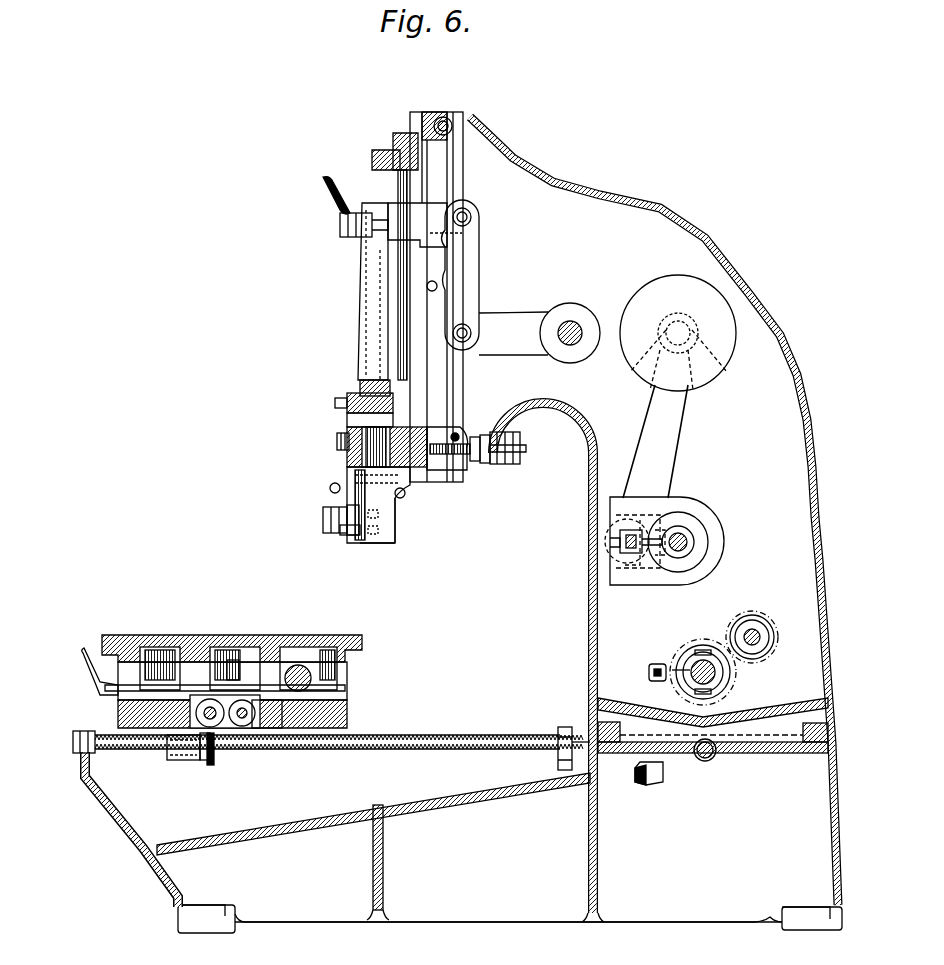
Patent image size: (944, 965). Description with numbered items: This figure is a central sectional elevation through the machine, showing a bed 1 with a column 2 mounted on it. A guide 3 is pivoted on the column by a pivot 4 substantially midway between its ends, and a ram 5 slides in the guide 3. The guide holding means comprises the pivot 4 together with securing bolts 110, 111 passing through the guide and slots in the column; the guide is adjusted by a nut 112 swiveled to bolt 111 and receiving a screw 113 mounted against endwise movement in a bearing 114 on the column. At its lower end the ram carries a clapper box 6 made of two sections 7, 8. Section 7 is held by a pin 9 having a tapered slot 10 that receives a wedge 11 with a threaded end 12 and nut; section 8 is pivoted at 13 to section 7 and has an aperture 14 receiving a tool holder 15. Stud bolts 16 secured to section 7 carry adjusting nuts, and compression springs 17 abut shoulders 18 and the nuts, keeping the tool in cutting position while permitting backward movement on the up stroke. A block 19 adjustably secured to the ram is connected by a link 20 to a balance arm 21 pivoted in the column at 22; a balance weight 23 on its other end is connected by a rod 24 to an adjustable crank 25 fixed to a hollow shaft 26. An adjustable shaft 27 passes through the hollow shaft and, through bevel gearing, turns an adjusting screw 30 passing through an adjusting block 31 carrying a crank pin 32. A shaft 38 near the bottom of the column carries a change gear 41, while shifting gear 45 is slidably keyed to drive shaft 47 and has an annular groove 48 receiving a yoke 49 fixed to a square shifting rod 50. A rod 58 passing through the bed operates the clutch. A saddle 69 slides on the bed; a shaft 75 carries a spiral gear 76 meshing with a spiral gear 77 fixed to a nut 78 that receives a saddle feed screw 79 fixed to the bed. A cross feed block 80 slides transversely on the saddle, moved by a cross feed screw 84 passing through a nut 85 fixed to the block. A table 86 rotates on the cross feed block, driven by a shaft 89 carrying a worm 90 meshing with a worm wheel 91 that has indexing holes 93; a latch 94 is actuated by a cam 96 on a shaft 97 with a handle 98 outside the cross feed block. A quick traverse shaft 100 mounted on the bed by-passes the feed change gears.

The bed 1 is at (326, 924).
The column 2 is at (583, 200).
The guide 3 is at (448, 178).
The pivot 4 is at (437, 290).
The ram 5 is at (360, 345).
The clapper box 6 is at (404, 497).
The section 7 is at (347, 483).
The section 8 is at (380, 547).
The pin 9 is at (362, 461).
The tapered slot 10 is at (347, 408).
The wedge 11 is at (367, 430).
The threaded end 12 is at (337, 441).
The pivot 13 is at (403, 500).
The aperture 14 is at (367, 545).
The tool holder 15 is at (340, 532).
The stud bolts 16 is at (347, 510).
The compression springs 17 is at (323, 522).
The shoulders 18 is at (365, 498).
The block 19 is at (385, 212).
The link 20 is at (470, 253).
The balance arm 21 is at (522, 350).
The pivot 22 is at (572, 330).
The balance weight 23 is at (657, 300).
The rod 24 is at (672, 427).
The adjustable crank 25 is at (672, 498).
The hollow shaft 26 is at (690, 540).
The adjustable shaft 27 is at (676, 578).
The adjusting screw 30 is at (640, 575).
The adjusting block 31 is at (612, 552).
The crank pin 32 is at (620, 533).
The shaft 38 is at (762, 636).
The change gear 41 is at (774, 658).
The shifting gear 45 is at (732, 690).
The drive shaft 47 is at (690, 682).
The annular groove 48 is at (695, 660).
The yoke 49 is at (668, 668).
The shifting rod 50 is at (648, 672).
The rod 58 is at (645, 788).
The saddle 69 is at (347, 715).
The shaft 75 is at (218, 728).
The spiral gear 76 is at (205, 760).
The spiral gear 77 is at (211, 766).
The nut 78 is at (178, 760).
The saddle feed screw 79 is at (348, 752).
The cross feed block 80 is at (347, 690).
The cross feed screw 84 is at (267, 714).
The nut 85 is at (248, 727).
The table 86 is at (362, 640).
The shaft 89 is at (295, 665).
The worm 90 is at (322, 655).
The worm wheel 91 is at (178, 680).
The holes 93 is at (200, 680).
The latch 94 is at (238, 665).
The cam 96 is at (244, 728).
The shaft 97 is at (135, 700).
The handle 98 is at (90, 675).
The shaft 100 is at (706, 762).
The securing bolt 110 is at (445, 122).
The securing bolt 111 is at (460, 435).
The nut 112 is at (478, 465).
The screw 113 is at (447, 462).
The bearing 114 is at (508, 466).